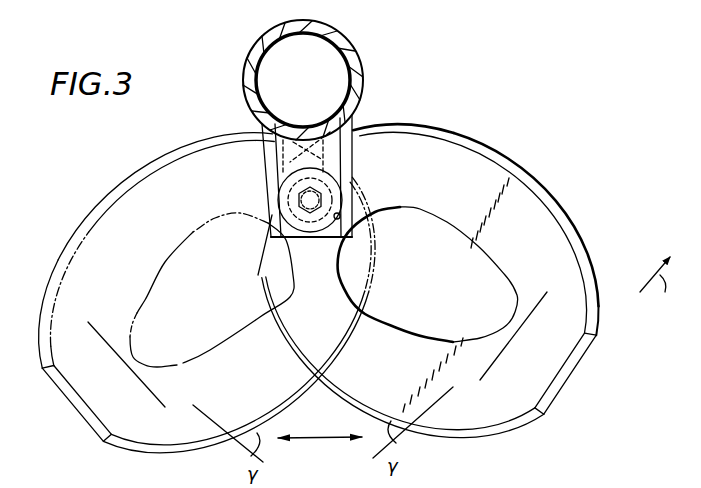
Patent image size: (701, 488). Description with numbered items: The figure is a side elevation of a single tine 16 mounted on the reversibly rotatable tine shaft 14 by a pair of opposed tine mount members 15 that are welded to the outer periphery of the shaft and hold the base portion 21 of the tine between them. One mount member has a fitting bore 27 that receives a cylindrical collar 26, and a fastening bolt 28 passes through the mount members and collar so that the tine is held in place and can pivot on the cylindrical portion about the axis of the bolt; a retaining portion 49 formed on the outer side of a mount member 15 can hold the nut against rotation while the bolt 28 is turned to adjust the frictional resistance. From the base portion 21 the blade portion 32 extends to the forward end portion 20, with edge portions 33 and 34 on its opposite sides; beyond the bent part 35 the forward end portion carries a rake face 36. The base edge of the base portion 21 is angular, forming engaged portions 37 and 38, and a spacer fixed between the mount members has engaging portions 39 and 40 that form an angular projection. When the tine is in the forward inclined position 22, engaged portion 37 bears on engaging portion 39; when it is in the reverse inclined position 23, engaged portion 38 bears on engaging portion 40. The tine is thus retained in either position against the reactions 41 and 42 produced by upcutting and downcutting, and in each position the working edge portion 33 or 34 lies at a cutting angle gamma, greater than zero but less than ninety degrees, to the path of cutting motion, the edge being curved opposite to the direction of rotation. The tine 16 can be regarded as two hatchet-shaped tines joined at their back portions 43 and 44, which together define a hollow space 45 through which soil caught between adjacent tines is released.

The tine shaft 14 is at (357, 50).
The tine mount members 15 is at (357, 192).
The tine 16 is at (148, 160).
The forward end portion 20 is at (580, 368).
The base portion 21 is at (373, 137).
The forward inclined position 22 is at (62, 430).
The reverse inclined position 23 is at (598, 423).
The cylindrical collar 26 is at (302, 238).
The fitting bore 27 is at (342, 218).
The fastening bolt 28 is at (298, 192).
The blade portion 32 is at (505, 185).
The edge portion 33 is at (552, 205).
The edge portion 34 is at (292, 341).
The bent part 35 is at (535, 310).
The rake face 36 is at (570, 355).
The engaged portion 37 is at (250, 112).
The engaged portion 38 is at (353, 117).
The engaging portion 39 is at (285, 125).
The engaging portion 40 is at (329, 125).
The reaction 41 is at (58, 238).
The reaction 42 is at (658, 289).
The back portion 43 is at (482, 268).
The back portion 44 is at (417, 331).
The hollow space 45 is at (500, 307).
The retaining portion 49 is at (350, 160).